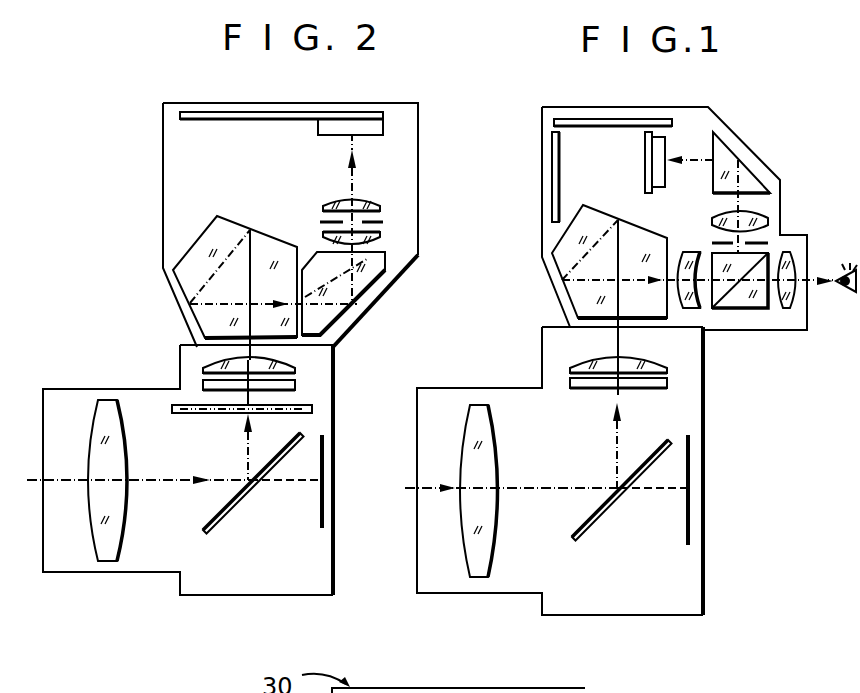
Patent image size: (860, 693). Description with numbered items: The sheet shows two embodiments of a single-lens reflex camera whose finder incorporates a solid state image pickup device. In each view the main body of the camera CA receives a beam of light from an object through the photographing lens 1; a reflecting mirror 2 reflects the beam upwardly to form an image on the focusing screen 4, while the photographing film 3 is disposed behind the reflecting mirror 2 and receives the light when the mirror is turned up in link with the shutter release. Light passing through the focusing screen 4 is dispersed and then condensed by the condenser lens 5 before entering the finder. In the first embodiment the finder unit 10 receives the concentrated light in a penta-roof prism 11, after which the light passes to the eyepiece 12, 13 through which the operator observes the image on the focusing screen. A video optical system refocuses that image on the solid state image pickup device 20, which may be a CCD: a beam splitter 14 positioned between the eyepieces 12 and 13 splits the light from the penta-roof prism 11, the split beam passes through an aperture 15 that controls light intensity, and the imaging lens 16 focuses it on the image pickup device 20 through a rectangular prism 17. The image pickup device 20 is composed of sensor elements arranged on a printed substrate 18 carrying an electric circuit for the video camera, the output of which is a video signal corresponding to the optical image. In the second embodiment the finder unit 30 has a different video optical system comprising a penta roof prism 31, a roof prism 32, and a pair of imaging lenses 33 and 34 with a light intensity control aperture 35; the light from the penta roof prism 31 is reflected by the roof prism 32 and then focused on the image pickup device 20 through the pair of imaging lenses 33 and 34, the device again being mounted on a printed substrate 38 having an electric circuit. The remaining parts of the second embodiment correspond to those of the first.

In FIG. 2, the photographing lens 1 is at (121, 523).
In FIG. 1, the photographing lens 1 is at (492, 545).
In FIG. 2, the reflecting mirror 2 is at (235, 503).
In FIG. 1, the reflecting mirror 2 is at (600, 520).
In FIG. 2, the photographing film 3 is at (322, 515).
In FIG. 1, the photographing film 3 is at (690, 530).
In FIG. 2, the focusing screen 4 is at (295, 386).
In FIG. 1, the focusing screen 4 is at (660, 388).
In FIG. 2, the condenser lens 5 is at (295, 365).
In FIG. 1, the condenser lens 5 is at (657, 366).
In FIG. 1, the finder unit 10 is at (537, 137).
In FIG. 1, the penta-roof prism 11 is at (553, 253).
In FIG. 1, the eyepiece 12 is at (698, 307).
In FIG. 1, the eyepiece 13 is at (790, 308).
In FIG. 1, the beam splitter 14 is at (750, 304).
In FIG. 1, the aperture 15 is at (760, 243).
In FIG. 1, the imaging lens 16 is at (760, 218).
In FIG. 1, the rectangular prism 17 is at (750, 183).
In FIG. 1, the printed substrate 18 is at (602, 119).
In FIG. 2, the solid state image pickup device 20 is at (383, 128).
In FIG. 1, the solid state image pickup device 20 is at (665, 147).
In FIG. 2, the finder unit 30 is at (182, 99).
In FIG. 2, the penta roof prism 31 is at (190, 282).
In FIG. 2, the roof prism 32 is at (363, 282).
In FIG. 2, the imaging lens 33 is at (378, 238).
In FIG. 2, the imaging lens 34 is at (372, 203).
In FIG. 2, the light intensity control aperture 35 is at (383, 222).
In FIG. 2, the printed substrate 38 is at (284, 112).
In FIG. 2, the main body of a single-lens reflex camera CA is at (290, 597).
In FIG. 1, the main body of a single-lens reflex camera CA is at (604, 617).